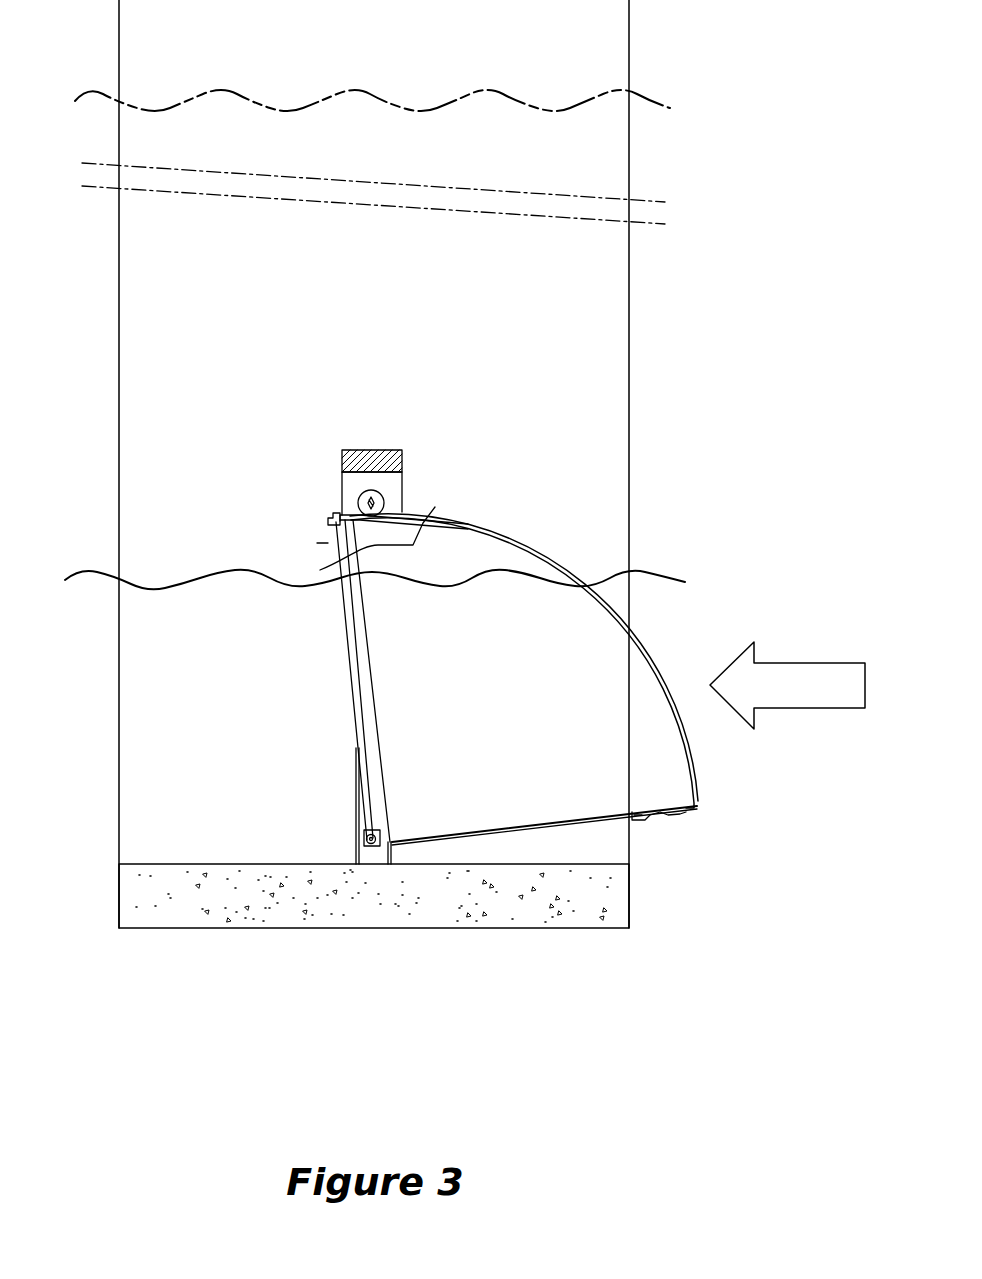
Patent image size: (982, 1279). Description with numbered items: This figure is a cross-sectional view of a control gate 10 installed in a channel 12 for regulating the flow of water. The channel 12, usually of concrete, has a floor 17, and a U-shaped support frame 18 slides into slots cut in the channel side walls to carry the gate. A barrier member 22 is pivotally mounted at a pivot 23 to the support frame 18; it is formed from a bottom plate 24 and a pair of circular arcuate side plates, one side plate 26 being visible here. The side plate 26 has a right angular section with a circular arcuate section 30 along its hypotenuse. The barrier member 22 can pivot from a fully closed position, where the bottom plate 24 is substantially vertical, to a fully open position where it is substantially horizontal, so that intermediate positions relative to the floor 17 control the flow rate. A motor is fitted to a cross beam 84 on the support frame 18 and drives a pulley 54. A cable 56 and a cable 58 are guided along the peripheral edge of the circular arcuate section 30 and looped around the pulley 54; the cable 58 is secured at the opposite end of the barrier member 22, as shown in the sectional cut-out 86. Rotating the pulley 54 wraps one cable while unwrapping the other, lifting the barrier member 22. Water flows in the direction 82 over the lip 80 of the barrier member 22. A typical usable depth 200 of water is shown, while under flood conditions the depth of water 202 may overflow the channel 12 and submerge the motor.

The control gate 10 is at (440, 468).
The channel 12 is at (118, 718).
The floor 17 is at (181, 862).
The support frame 18 is at (375, 856).
The barrier member 22 is at (347, 686).
The pivot 23 is at (366, 838).
The bottom plate 24 is at (336, 630).
The side plate 26 is at (483, 712).
The circular arcuate section 30 is at (537, 551).
The pulley 54 is at (362, 494).
The cable 56 is at (357, 509).
The cable 58 is at (663, 820).
The lip 80 is at (328, 520).
The direction of flow 82 is at (822, 699).
The cross beam 84 is at (370, 450).
The sectional cut-out 86 is at (358, 572).
The usable depth 200 is at (97, 572).
The depth of water 202 is at (370, 95).